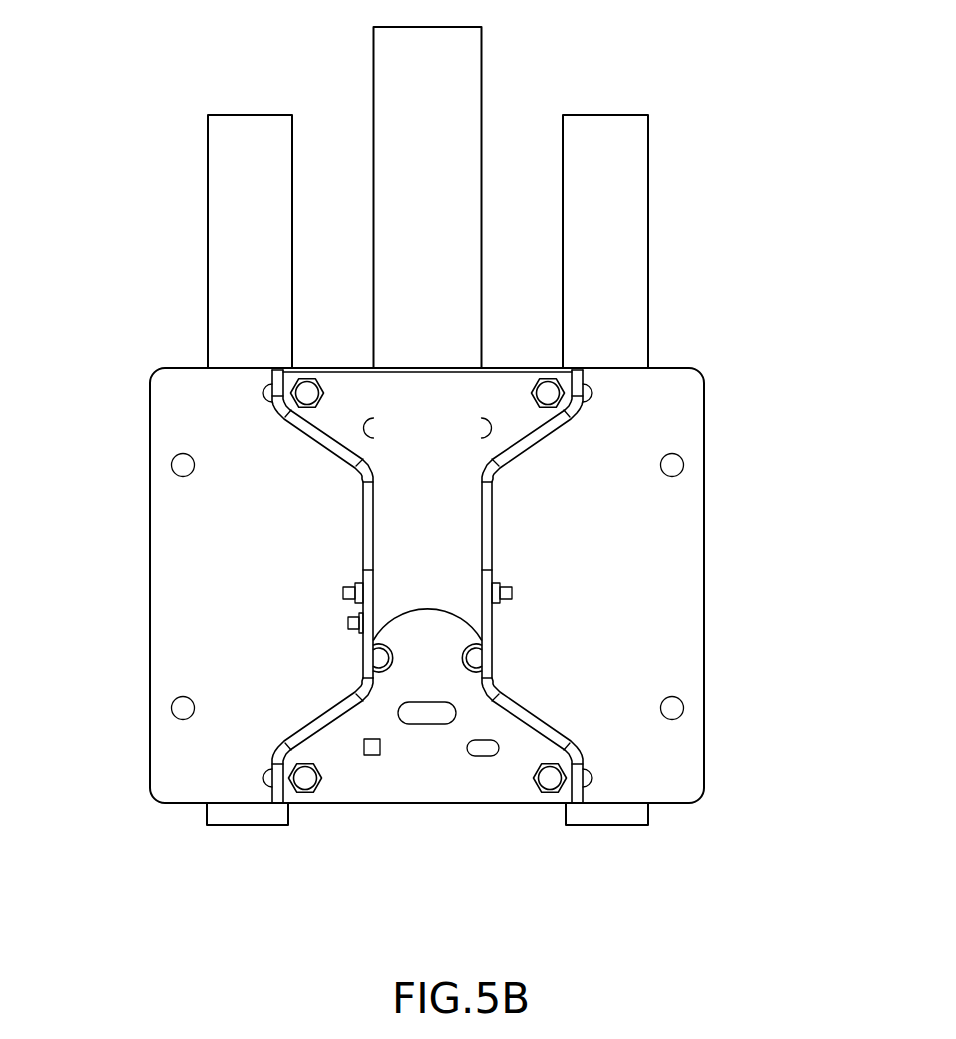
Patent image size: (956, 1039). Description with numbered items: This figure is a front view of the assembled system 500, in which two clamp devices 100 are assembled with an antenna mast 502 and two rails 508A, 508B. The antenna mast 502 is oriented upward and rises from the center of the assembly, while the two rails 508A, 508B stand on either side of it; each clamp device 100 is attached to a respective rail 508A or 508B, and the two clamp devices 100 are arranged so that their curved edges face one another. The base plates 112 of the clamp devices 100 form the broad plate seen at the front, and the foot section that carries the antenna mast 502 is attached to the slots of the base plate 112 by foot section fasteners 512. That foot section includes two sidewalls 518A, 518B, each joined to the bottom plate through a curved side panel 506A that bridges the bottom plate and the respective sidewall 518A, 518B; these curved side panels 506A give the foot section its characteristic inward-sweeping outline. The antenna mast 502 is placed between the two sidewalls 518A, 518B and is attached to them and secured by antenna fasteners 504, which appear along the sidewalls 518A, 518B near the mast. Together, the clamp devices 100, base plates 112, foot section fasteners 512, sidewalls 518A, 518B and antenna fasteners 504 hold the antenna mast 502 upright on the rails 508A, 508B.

The assembled system 500 is at (436, 483).
The clamp device 100 is at (436, 585).
The base plate 112 is at (167, 526).
The antenna mast 502 is at (384, 62).
The rail 508A is at (640, 145).
The rail 508B is at (210, 162).
The sidewall 518A is at (367, 535).
The sidewall 518B is at (485, 523).
The curved side panel 506A is at (340, 762).
The antenna fasteners 504 is at (343, 593).
The foot section fasteners 512 is at (300, 773).